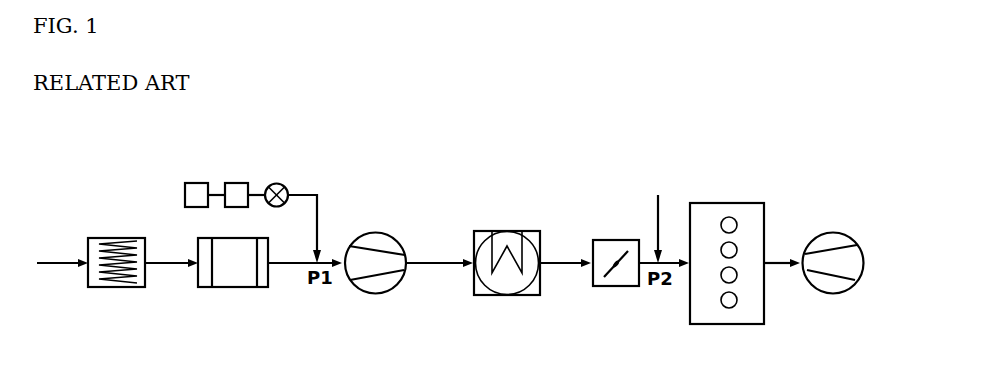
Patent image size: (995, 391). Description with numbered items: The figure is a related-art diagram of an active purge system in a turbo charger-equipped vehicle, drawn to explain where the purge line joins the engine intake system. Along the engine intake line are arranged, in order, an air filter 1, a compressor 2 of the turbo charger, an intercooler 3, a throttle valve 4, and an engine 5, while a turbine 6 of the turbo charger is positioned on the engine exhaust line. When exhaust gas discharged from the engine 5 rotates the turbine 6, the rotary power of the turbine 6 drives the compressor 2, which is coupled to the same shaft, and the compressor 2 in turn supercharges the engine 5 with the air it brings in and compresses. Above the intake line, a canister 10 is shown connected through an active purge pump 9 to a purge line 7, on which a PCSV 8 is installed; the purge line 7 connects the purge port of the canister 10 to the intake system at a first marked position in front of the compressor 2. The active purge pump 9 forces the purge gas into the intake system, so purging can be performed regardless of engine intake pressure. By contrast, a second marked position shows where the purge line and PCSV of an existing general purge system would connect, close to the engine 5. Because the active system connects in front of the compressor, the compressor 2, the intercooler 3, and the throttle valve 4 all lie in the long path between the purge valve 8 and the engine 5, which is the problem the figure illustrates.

The air filter 1 is at (113, 288).
The compressor 2 is at (388, 294).
The intercooler 3 is at (525, 297).
The throttle valve 4 is at (620, 288).
The engine 5 is at (720, 325).
The turbine 6 is at (820, 293).
The purge line 7 is at (302, 195).
The purge control solenoid valve (PCSV) 8 is at (278, 183).
The active purge pump 9 is at (238, 183).
The canister 10 is at (197, 183).